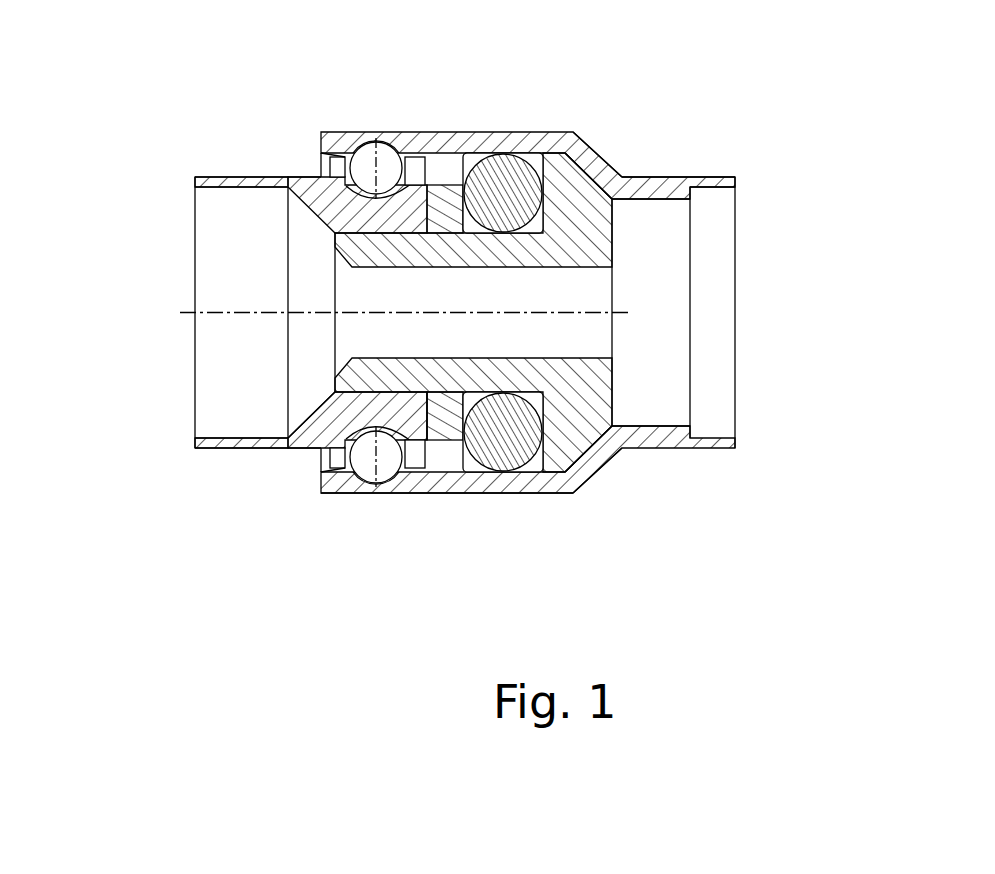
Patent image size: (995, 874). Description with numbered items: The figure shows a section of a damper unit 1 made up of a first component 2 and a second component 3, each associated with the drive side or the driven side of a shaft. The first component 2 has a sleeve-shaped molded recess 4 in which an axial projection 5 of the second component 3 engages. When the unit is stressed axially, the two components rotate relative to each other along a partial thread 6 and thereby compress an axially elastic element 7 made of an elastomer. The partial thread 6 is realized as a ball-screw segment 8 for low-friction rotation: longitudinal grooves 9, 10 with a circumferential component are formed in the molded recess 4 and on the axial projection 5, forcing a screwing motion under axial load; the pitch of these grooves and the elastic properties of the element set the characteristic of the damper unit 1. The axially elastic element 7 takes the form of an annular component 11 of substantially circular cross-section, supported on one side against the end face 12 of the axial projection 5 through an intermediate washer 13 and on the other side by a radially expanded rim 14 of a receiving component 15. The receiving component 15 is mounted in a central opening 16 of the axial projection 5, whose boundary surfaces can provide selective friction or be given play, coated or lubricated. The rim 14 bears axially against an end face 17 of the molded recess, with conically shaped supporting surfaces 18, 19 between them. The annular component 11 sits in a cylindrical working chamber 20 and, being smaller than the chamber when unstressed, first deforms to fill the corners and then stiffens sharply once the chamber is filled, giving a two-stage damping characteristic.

The damper unit 1 is at (770, 202).
The first component 2 is at (660, 160).
The second component 3 is at (212, 151).
The sleeve-shaped molded recess 4 is at (524, 133).
The axial projection 5 is at (342, 415).
The partial thread 6 is at (391, 107).
The axially elastic element 7 is at (583, 149).
The ball-screw segment 8 is at (341, 489).
The longitudinal groove 9 is at (410, 445).
The longitudinal groove 10 is at (398, 430).
The annular component 11 is at (497, 452).
The end face 12 is at (403, 214).
The intermediate washer 13 is at (452, 168).
The radially expanded rim 14 is at (625, 454).
The receiving component 15 is at (450, 250).
The central opening 16 is at (374, 380).
The end face 17 is at (662, 153).
The supporting surface 18 is at (600, 195).
The supporting surface 19 is at (603, 165).
The working chamber 20 is at (582, 409).